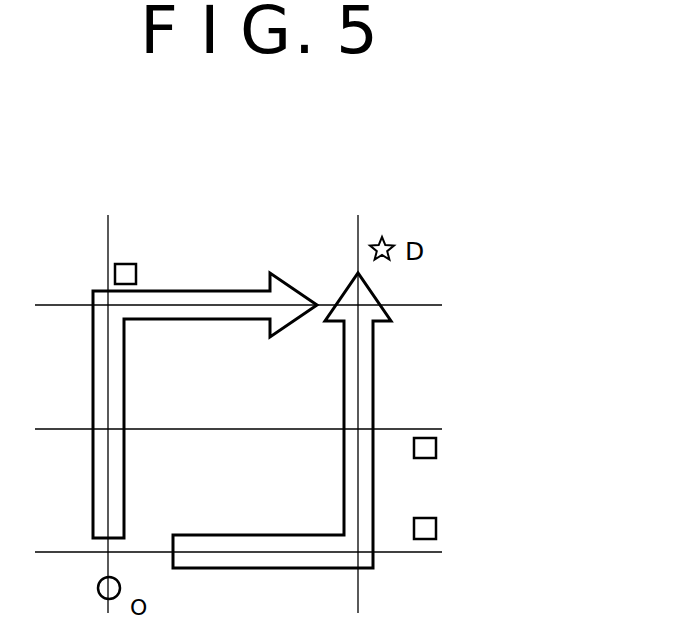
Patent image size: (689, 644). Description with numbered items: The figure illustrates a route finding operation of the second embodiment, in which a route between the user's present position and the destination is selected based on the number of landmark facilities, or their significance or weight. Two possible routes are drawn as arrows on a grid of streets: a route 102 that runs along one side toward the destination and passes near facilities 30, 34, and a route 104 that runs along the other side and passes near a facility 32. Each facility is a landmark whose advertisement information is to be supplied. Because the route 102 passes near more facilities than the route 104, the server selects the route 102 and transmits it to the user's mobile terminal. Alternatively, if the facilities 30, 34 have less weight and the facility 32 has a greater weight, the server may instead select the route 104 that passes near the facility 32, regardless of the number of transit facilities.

The route 104 is at (238, 290).
The route 102 is at (373, 380).
The facility 32 is at (130, 263).
The facility 34 is at (436, 448).
The facility 30 is at (436, 527).